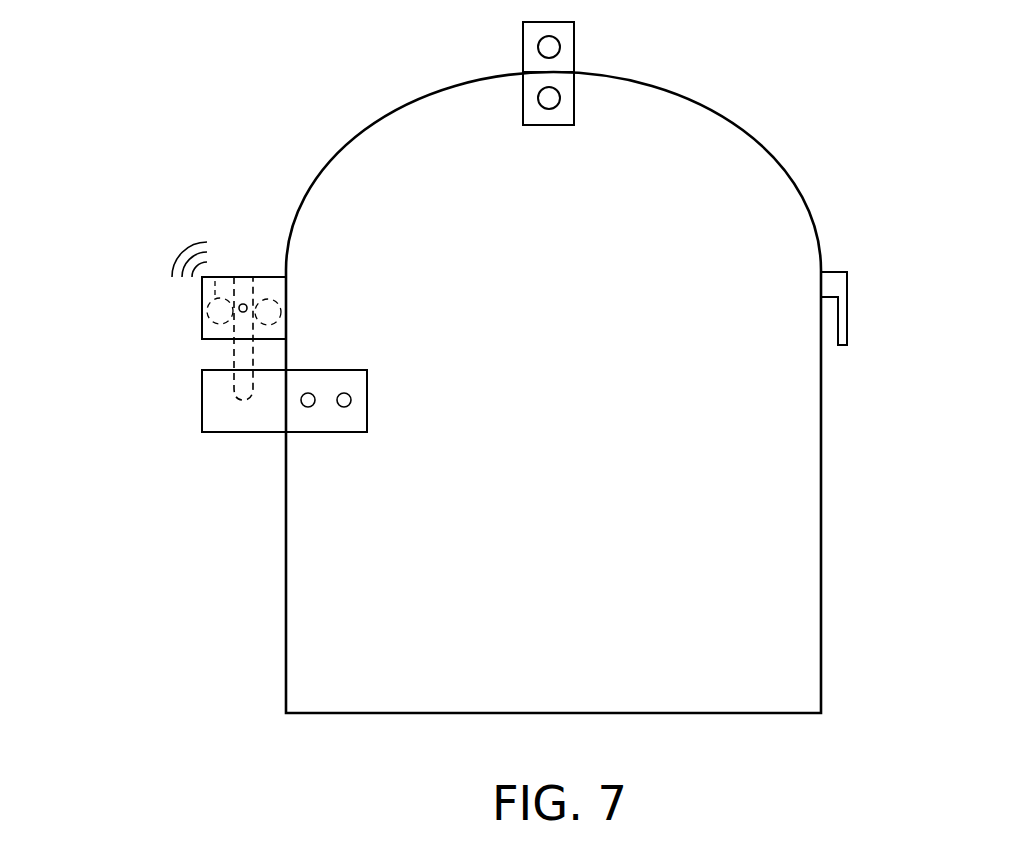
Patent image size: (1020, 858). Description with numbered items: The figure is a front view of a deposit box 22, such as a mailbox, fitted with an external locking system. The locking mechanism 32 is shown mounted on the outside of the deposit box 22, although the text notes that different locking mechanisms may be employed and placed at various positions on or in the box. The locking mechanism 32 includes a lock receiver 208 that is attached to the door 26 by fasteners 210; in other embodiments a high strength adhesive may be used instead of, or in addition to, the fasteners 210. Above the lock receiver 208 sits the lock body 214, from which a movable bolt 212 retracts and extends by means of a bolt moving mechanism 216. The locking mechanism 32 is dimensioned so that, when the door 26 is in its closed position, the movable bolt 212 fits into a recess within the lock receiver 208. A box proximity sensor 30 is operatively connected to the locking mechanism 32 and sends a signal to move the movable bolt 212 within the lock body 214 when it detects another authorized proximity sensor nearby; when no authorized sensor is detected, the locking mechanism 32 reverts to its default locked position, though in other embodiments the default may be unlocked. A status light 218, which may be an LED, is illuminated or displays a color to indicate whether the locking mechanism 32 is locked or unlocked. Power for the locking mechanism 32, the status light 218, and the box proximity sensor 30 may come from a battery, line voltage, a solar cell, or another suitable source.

The deposit box 22 is at (757, 140).
The door 26 is at (572, 425).
The box proximity sensor 30 is at (202, 283).
The locking mechanism 32 is at (181, 385).
The lock receiver 208 is at (223, 418).
The fasteners 210 is at (344, 407).
The movable bolt 212 is at (233, 356).
The lock body 214 is at (271, 277).
The bolt moving mechanism 216 is at (208, 320).
The status light 218 is at (242, 304).